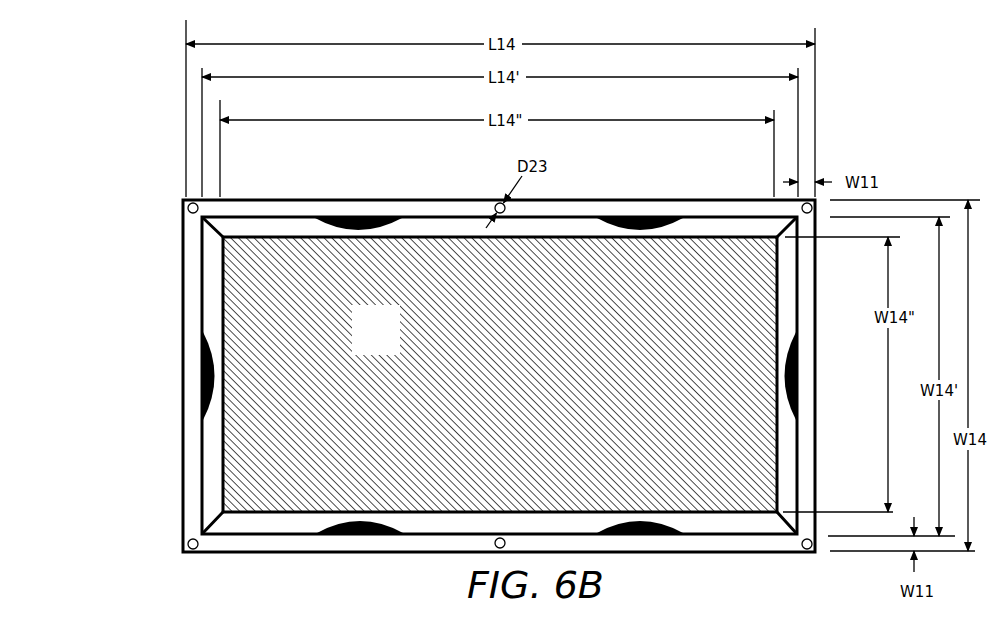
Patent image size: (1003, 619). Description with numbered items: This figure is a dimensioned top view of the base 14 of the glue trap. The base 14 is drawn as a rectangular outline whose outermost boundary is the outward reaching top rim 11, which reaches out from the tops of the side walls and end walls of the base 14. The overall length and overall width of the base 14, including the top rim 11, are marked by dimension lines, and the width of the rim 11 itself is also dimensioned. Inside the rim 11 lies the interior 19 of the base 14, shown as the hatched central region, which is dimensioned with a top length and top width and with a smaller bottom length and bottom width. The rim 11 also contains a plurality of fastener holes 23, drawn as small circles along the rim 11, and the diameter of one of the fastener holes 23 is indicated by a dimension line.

The top rim 11 is at (420, 205).
The base 14 is at (143, 260).
The interior 19 is at (391, 344).
The fastener holes 23 is at (492, 204).